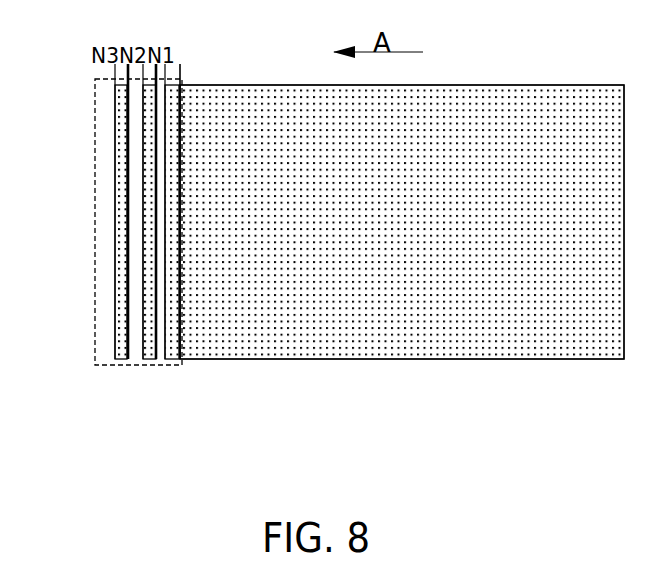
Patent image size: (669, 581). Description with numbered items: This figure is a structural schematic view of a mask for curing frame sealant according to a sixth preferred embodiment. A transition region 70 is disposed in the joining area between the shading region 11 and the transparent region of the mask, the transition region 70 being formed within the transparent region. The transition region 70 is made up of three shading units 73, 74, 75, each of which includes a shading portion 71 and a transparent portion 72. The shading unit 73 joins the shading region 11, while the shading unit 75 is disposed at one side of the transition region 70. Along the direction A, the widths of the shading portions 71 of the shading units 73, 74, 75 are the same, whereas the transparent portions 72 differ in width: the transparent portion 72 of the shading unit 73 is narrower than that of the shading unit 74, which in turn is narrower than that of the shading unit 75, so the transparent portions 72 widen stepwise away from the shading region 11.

The shading region 11 is at (481, 121).
The transition region 70 is at (90, 72).
The shading portion 71 is at (136, 157).
The transparent portion 72 is at (154, 130).
The shading unit 73 is at (169, 373).
The shading unit 74 is at (139, 373).
The shading unit 75 is at (106, 373).